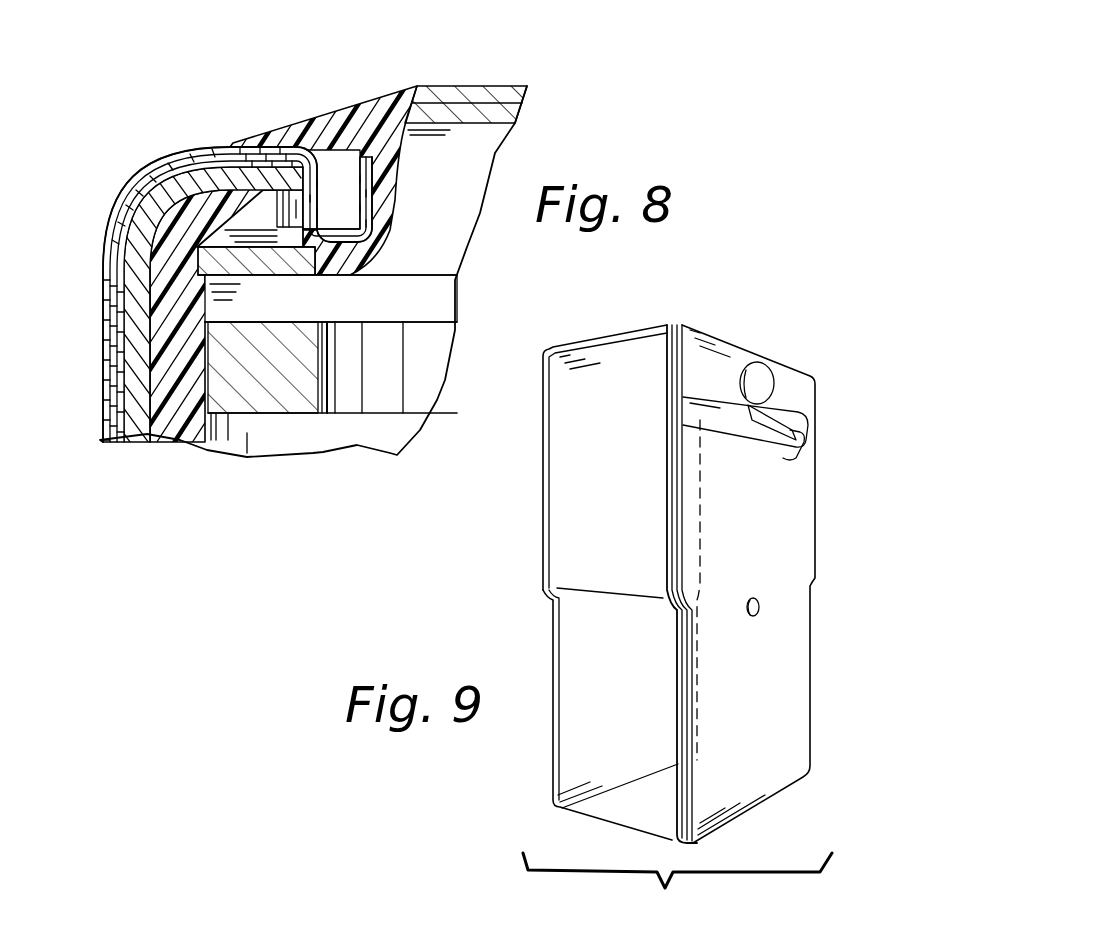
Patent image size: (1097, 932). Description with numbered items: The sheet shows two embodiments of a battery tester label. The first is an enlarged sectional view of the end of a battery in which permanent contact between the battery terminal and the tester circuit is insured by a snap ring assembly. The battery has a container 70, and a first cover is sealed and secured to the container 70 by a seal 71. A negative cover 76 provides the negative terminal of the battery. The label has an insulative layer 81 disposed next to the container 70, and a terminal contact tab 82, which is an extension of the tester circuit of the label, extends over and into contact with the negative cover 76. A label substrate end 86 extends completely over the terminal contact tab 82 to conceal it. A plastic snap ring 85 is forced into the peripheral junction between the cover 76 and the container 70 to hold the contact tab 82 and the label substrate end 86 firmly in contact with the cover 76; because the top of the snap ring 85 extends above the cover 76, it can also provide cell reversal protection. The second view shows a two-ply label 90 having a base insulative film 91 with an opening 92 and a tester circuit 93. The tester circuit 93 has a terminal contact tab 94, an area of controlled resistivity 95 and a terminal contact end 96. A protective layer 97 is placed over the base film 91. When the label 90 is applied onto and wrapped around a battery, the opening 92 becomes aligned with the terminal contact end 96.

In FIG. 8, the container 70 is at (157, 188).
In FIG. 8, the seal 71 is at (165, 341).
In FIG. 8, the negative cover 76 is at (488, 100).
In FIG. 8, the insulative layer 81 is at (130, 440).
In FIG. 8, the terminal contact tab 82 is at (370, 183).
In FIG. 8, the plastic snap ring 85 is at (360, 105).
In FIG. 8, the label substrate end 86 is at (340, 148).
In FIG. 9, the label 90 is at (522, 552).
In FIG. 9, the base insulative film 91 is at (790, 738).
In FIG. 9, the opening 92 is at (760, 608).
In FIG. 9, the tester circuit 93 is at (790, 412).
In FIG. 9, the terminal contact tab 94 is at (690, 410).
In FIG. 9, the area of controlled resistivity 95 is at (783, 458).
In FIG. 9, the terminal contact end 96 is at (762, 380).
In FIG. 9, the protective layer 97 is at (582, 753).